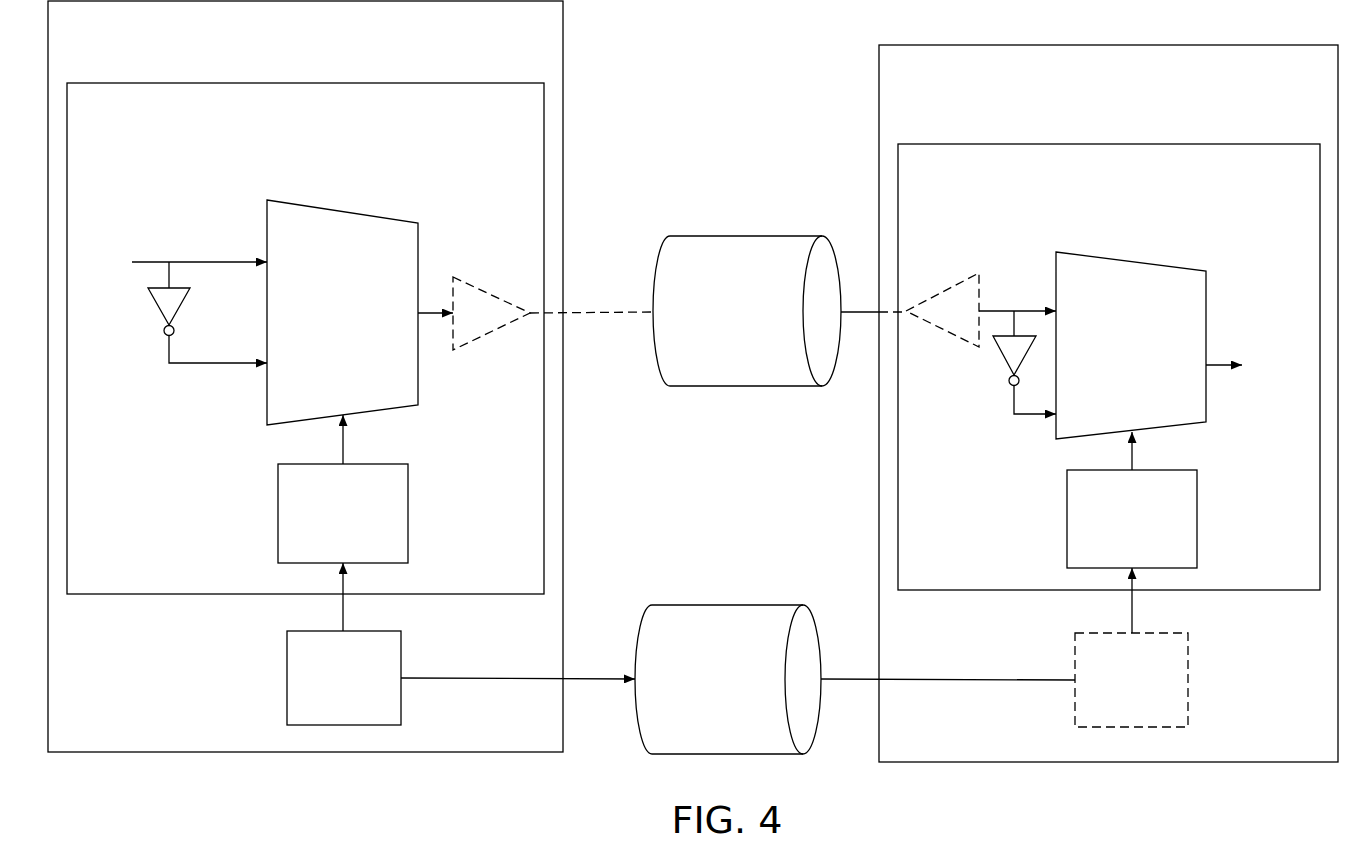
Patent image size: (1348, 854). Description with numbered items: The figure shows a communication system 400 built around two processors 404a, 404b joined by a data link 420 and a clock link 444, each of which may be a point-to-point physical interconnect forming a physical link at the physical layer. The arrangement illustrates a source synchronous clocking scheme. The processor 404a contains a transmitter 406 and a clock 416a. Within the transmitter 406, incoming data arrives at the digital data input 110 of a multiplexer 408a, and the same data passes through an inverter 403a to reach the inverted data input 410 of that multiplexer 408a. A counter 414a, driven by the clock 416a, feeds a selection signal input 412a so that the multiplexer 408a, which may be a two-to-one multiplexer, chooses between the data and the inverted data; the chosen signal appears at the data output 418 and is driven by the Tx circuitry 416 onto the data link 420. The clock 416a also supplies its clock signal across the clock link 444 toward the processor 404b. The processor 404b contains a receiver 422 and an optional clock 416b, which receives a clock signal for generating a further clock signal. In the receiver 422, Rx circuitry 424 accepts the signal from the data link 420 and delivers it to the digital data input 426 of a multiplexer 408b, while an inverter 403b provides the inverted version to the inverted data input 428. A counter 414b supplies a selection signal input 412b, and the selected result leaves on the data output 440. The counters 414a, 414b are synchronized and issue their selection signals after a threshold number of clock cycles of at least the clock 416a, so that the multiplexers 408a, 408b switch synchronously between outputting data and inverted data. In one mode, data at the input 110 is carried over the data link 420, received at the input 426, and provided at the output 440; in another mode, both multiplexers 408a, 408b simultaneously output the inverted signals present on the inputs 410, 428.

The communication system 400 is at (407, 800).
The processor 404a is at (280, 67).
The transmitter 406 is at (287, 146).
The digital data input 110 is at (173, 259).
The inverter 403a is at (158, 312).
The inverted data input 410 is at (213, 366).
The multiplexer 408a is at (320, 337).
The data output 418 is at (440, 318).
The Tx circuitry 416 is at (501, 321).
The selection signal input 412a is at (346, 434).
The counter 414a is at (318, 537).
The clock 416a is at (319, 702).
The data link 420 is at (709, 347).
The clock link 444 is at (691, 716).
The processor 404b is at (1084, 114).
The receiver 422 is at (1090, 207).
The Rx circuitry 424 is at (971, 326).
The digital data input 426 is at (996, 311).
The inverter 403b is at (1000, 353).
The inverted data input 428 is at (1025, 417).
The multiplexer 408b is at (1106, 369).
The data output 440 is at (1253, 359).
The selection signal input 412b is at (1135, 455).
The counter 414b is at (1107, 541).
The clock 416b is at (1106, 704).